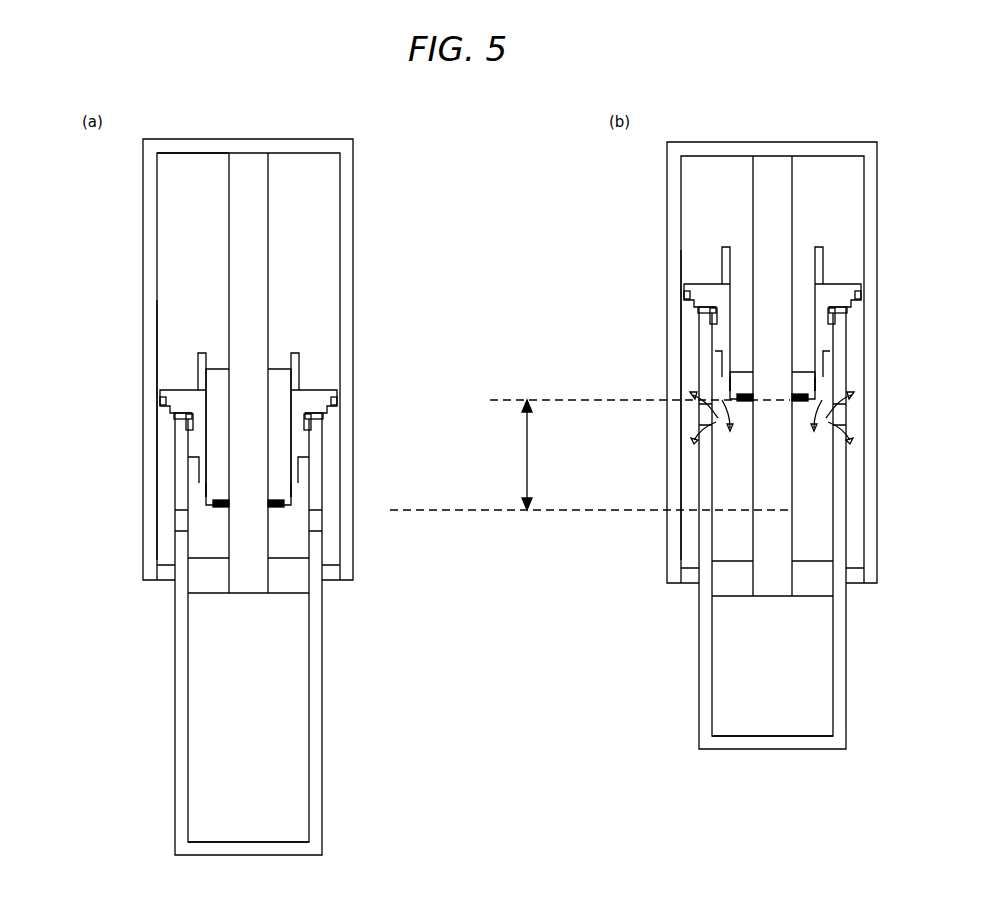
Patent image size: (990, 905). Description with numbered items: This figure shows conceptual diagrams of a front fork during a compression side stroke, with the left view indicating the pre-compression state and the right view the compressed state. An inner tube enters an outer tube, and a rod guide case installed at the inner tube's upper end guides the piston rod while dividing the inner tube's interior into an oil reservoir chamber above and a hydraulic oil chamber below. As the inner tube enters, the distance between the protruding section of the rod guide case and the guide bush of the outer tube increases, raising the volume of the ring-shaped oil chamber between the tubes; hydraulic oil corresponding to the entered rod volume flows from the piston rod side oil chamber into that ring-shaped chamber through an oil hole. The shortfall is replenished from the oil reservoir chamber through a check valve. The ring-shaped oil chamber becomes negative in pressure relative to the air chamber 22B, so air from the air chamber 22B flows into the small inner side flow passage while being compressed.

The air chamber 22B is at (189, 275).